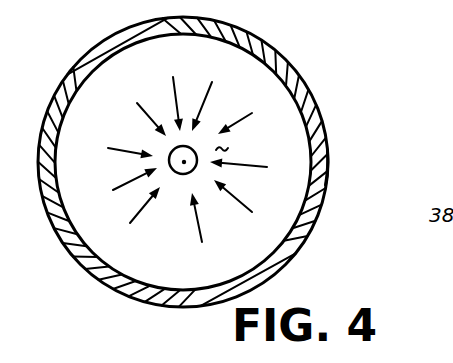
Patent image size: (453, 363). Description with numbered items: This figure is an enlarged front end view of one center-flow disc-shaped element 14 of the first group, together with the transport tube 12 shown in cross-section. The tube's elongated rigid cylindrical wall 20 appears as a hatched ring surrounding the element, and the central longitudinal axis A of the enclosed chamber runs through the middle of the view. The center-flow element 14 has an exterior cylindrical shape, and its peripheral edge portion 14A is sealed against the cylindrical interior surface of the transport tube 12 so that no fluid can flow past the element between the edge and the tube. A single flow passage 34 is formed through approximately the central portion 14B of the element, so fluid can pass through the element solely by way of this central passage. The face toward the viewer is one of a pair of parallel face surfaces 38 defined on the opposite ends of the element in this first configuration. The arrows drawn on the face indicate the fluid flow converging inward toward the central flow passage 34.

The transport tube 12 is at (319, 72).
The center-flow disc-shaped element 14 is at (320, 106).
The peripheral edge portion 14A is at (280, 222).
The central portion 14B is at (228, 149).
The cylindrical wall 20 is at (328, 173).
The flow passage 34 is at (196, 150).
The face surface 38 is at (93, 232).
The central longitudinal axis A is at (184, 162).